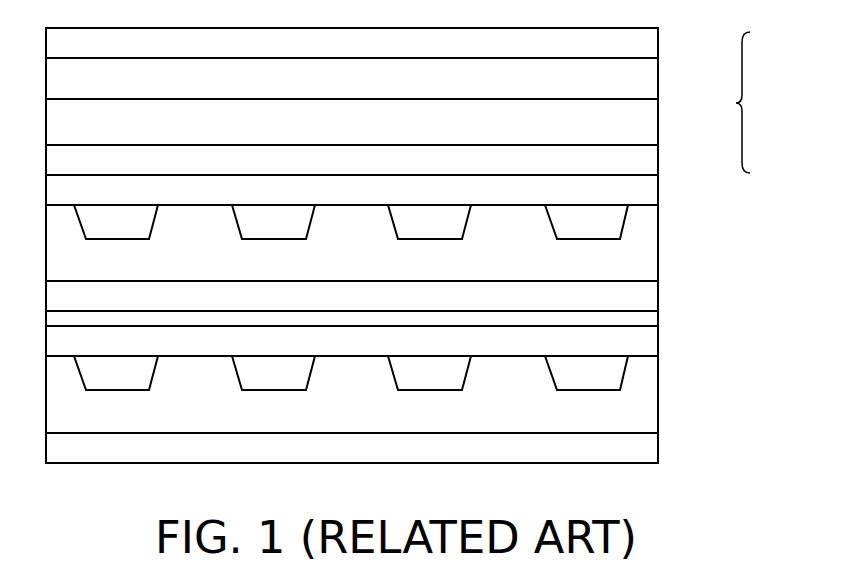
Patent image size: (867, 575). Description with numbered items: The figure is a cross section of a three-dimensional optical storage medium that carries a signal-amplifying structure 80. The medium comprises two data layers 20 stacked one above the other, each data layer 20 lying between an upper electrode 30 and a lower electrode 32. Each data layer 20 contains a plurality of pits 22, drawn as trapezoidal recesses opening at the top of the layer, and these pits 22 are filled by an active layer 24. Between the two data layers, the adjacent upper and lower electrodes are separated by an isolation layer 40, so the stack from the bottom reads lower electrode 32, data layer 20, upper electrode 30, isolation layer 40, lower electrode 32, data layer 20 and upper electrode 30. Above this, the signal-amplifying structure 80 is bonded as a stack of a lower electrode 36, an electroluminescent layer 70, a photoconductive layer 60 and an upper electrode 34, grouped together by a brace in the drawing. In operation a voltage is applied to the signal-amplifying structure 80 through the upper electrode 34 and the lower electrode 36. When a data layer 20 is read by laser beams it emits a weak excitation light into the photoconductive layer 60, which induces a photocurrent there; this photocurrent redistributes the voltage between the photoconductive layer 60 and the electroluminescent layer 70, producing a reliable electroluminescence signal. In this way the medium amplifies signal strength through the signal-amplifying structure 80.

The upper electrode 34 is at (645, 45).
The electroluminescent layer 70 is at (645, 81).
The photoconductive layer 60 is at (645, 123).
The lower electrode 36 is at (645, 163).
The signal-amplifying structure 80 is at (761, 102).
The upper electrode 30 is at (645, 192).
The data layer 20 is at (645, 248).
The lower electrode 32 is at (645, 297).
The isolation layer 40 is at (645, 322).
The pits 22 is at (622, 380).
The active layer 24 is at (590, 375).